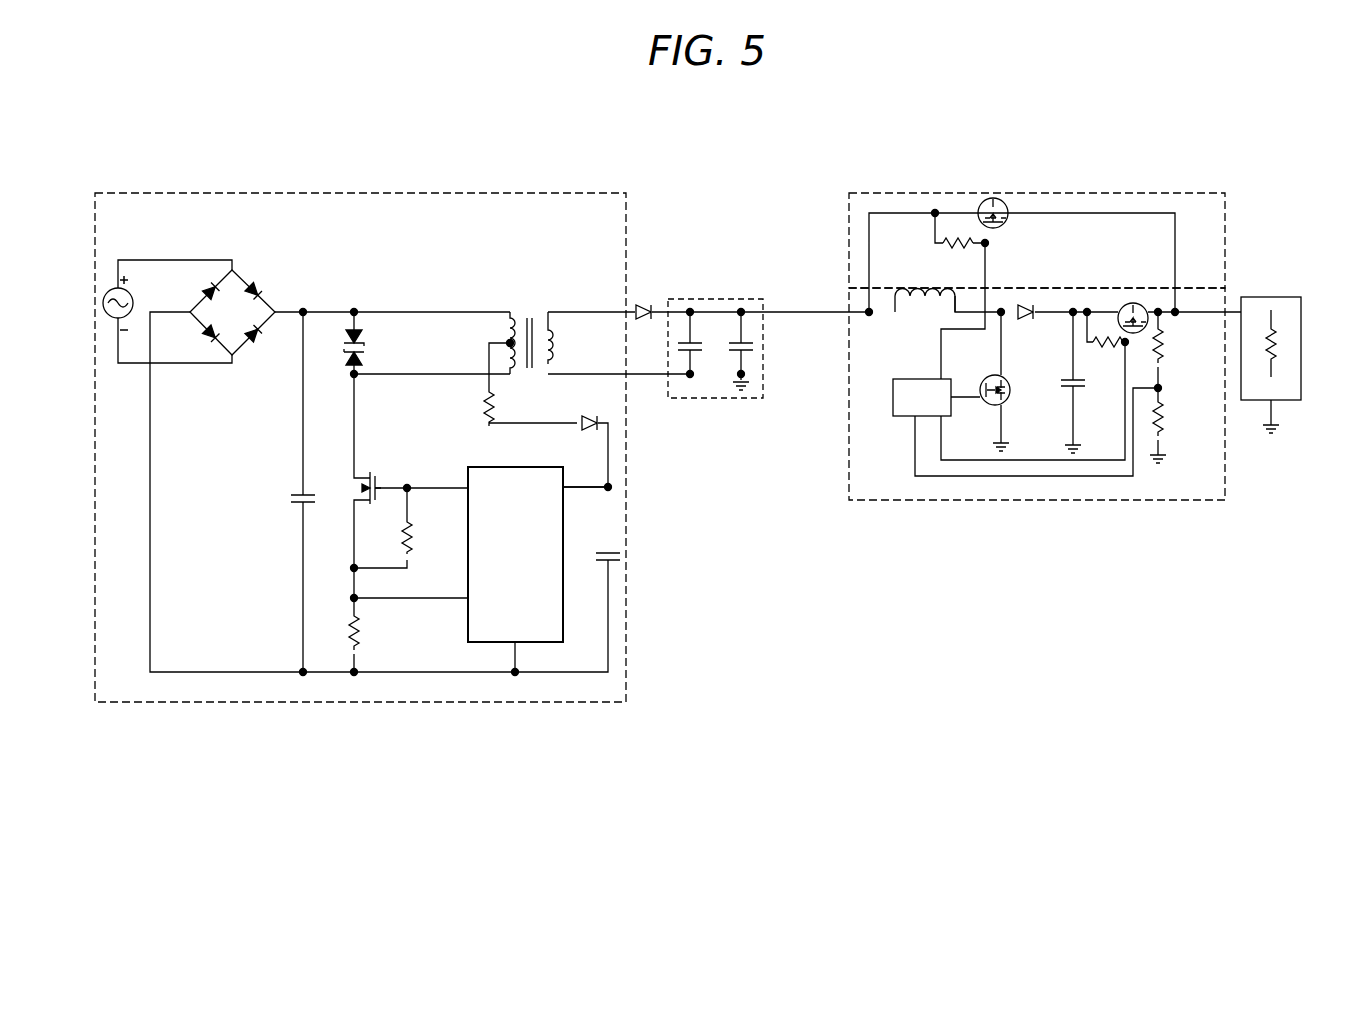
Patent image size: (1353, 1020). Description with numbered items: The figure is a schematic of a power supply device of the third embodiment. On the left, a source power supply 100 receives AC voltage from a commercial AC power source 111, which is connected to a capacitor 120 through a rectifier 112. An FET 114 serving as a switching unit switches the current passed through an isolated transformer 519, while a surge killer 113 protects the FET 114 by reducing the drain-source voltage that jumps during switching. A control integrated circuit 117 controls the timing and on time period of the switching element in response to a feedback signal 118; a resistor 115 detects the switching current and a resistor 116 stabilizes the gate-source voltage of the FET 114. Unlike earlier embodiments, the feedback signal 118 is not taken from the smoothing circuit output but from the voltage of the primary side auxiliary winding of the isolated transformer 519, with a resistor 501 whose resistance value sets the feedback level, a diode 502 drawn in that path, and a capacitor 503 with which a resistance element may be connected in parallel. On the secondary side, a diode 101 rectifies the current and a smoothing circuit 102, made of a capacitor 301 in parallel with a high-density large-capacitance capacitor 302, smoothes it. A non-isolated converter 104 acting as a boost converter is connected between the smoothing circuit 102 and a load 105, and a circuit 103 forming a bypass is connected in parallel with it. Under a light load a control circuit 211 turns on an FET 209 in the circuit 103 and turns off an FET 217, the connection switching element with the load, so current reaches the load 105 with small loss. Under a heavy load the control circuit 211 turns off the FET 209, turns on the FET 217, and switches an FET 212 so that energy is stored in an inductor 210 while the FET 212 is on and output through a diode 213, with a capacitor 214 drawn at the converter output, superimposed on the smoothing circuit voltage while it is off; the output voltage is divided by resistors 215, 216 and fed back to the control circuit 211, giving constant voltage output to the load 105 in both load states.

The source power supply 100 is at (404, 193).
The diode 101 is at (643, 301).
The smoothing circuit 102 is at (720, 299).
The circuit 103 is at (1087, 193).
The non-isolated converter 104 is at (988, 500).
The load 105 is at (1268, 297).
The commercial AC power source 111 is at (140, 300).
The rectifier 112 is at (262, 292).
The surge killer 113 is at (370, 356).
The FET 114 is at (380, 481).
The resistor 115 is at (365, 638).
The resistor 116 is at (410, 560).
The control integrated circuit 117 is at (498, 467).
The feedback signal 118 is at (581, 485).
The capacitor 120 is at (296, 494).
The FET 209 is at (998, 198).
The inductor 210 is at (909, 316).
The control circuit 211 is at (893, 418).
The FET 212 is at (1008, 380).
The diode 213 is at (1024, 304).
The capacitor 214 is at (1058, 383).
The resistor 215 is at (1166, 344).
The resistor 216 is at (1166, 414).
The FET 217 is at (1135, 303).
The capacitor 301 is at (684, 360).
The high-density large-capacitance capacitor 302 is at (735, 360).
The resistor 501 is at (499, 402).
The diode 502 is at (589, 413).
The capacitor 503 is at (623, 556).
The isolated transformer 519 is at (529, 318).